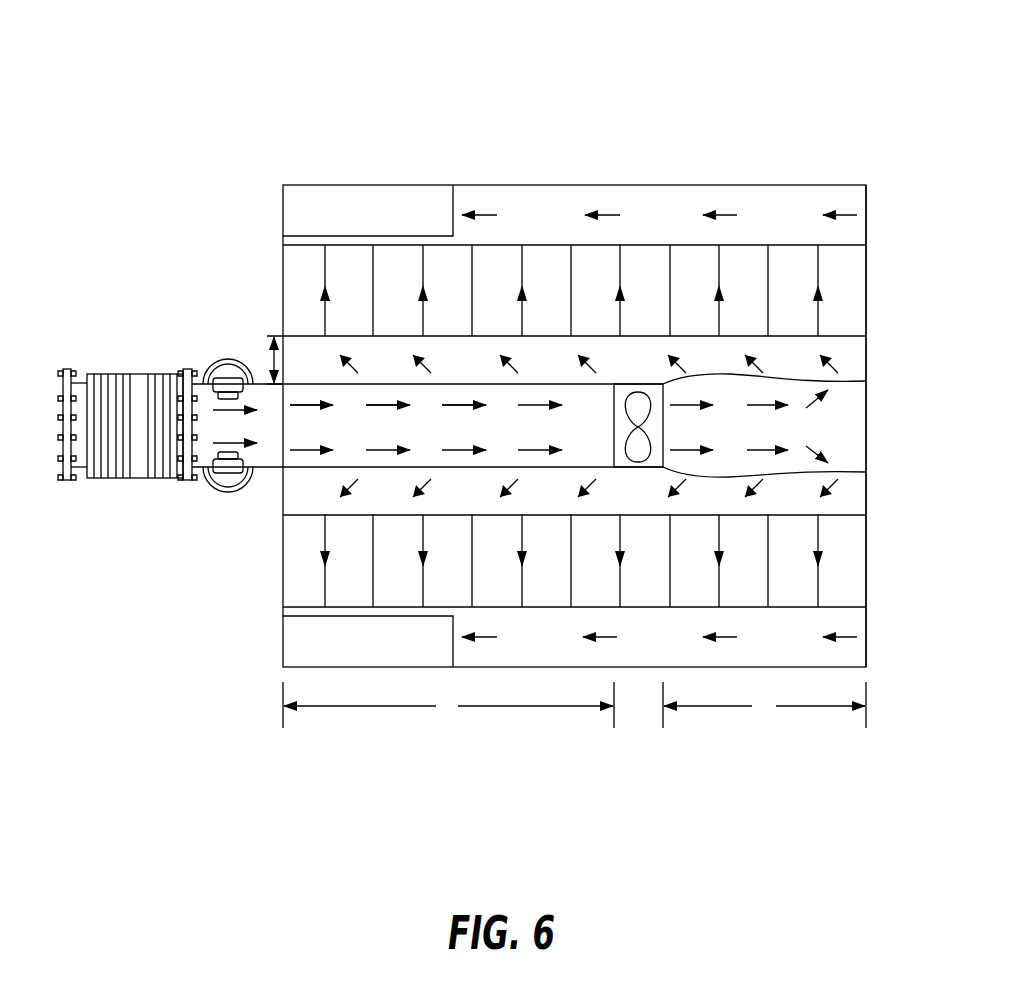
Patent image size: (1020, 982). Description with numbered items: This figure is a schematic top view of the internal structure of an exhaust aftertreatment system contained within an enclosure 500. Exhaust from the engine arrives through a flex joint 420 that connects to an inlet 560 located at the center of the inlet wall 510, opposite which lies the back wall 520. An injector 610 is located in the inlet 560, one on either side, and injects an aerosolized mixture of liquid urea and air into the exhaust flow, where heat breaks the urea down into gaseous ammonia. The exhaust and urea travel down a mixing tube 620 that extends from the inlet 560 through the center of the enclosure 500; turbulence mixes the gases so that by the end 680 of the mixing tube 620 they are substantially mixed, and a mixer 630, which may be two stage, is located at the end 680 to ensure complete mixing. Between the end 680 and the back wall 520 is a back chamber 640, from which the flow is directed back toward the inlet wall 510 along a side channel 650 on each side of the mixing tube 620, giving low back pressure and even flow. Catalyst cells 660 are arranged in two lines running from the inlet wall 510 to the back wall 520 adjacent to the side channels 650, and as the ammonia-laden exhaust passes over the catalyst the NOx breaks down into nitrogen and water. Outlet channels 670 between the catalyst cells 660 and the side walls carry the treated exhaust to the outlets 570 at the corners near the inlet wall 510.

The enclosure 500 is at (274, 88).
The flex joint 420 is at (105, 482).
The inlet wall 510 is at (283, 560).
The back wall 520 is at (866, 291).
The inlet 560 is at (193, 370).
The outlet 570 is at (288, 210).
The injector 610 is at (222, 372).
The mixing tube 620 is at (447, 439).
The mixer 630 is at (866, 381).
The back chamber 640 is at (848, 419).
The side channel 650 is at (312, 356).
The catalyst cell 660 is at (677, 650).
The outlet channel 670 is at (675, 230).
The end of mixing tube 680 is at (866, 472).